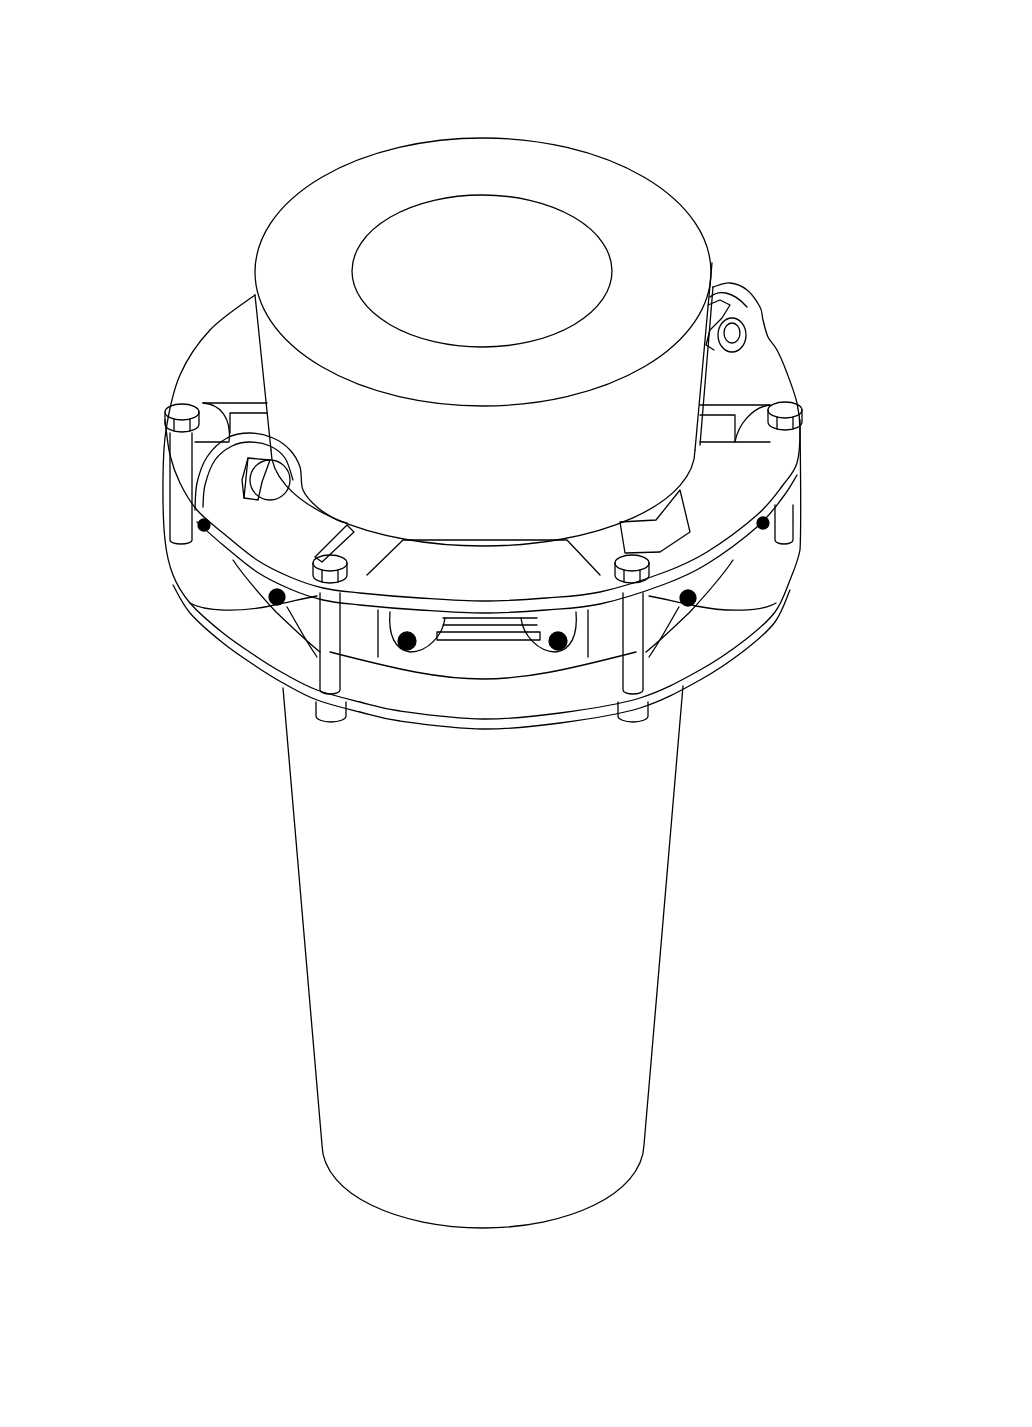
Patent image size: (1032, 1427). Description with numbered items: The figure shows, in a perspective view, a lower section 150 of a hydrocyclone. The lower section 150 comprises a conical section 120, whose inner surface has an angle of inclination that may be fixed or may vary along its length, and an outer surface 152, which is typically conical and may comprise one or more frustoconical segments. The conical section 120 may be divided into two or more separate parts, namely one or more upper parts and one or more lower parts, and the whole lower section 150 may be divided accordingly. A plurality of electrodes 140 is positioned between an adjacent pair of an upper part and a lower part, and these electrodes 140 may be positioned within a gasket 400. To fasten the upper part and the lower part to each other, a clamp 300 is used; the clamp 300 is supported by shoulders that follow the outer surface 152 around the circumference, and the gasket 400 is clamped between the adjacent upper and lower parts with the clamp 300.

The lower section 150 is at (718, 122).
The conical section 120 is at (430, 232).
The clamp 300 is at (777, 355).
The electrodes 140 is at (275, 599).
The gasket 400 is at (317, 650).
The outer surface 152 is at (320, 905).